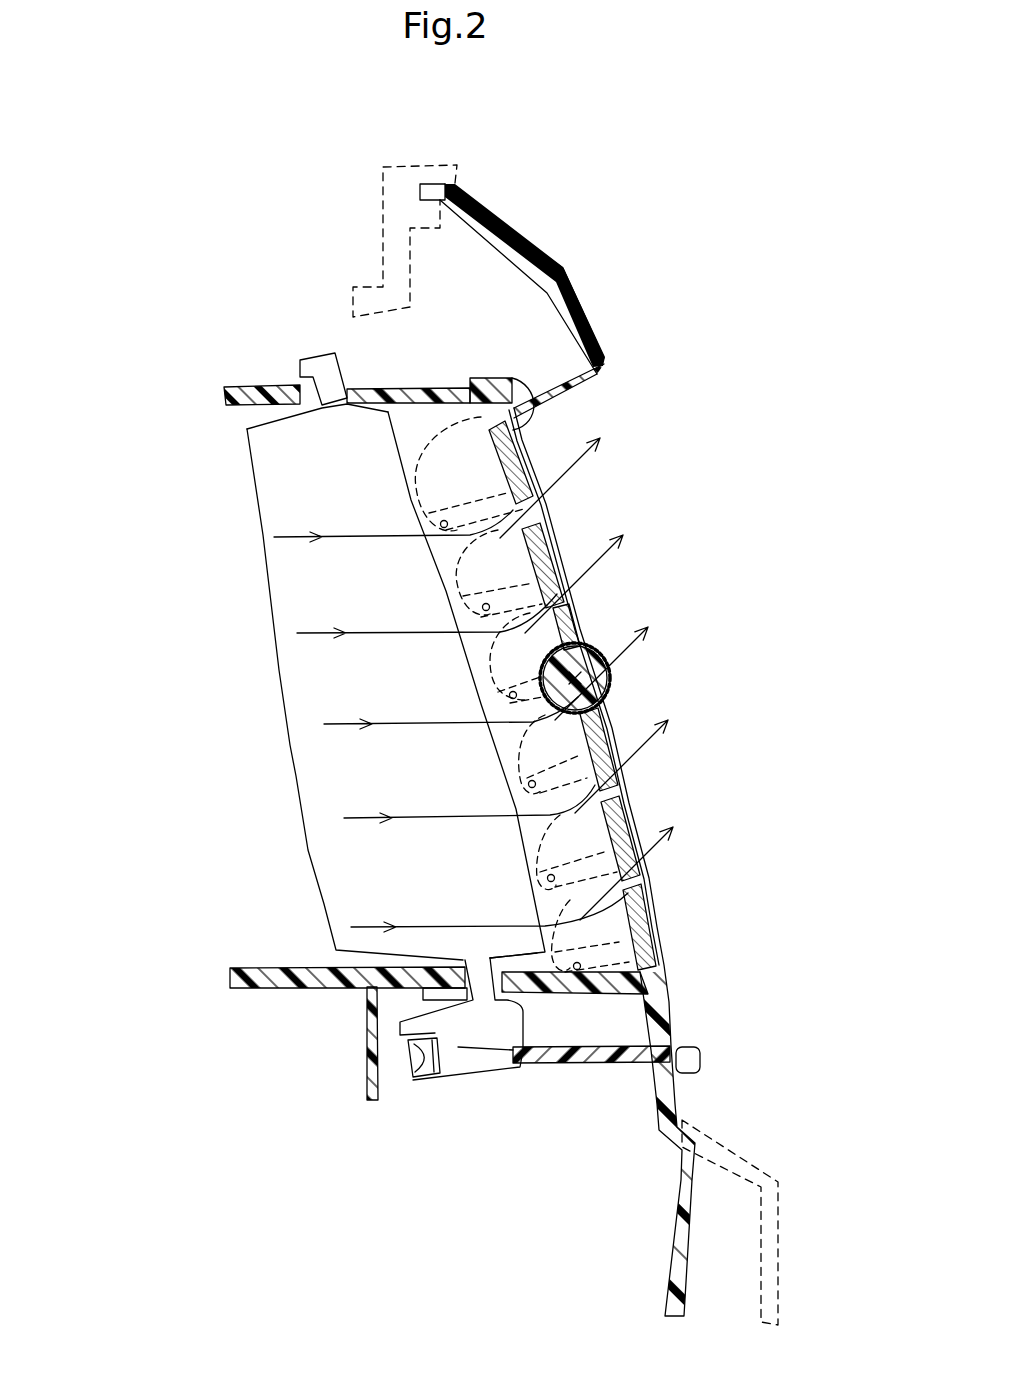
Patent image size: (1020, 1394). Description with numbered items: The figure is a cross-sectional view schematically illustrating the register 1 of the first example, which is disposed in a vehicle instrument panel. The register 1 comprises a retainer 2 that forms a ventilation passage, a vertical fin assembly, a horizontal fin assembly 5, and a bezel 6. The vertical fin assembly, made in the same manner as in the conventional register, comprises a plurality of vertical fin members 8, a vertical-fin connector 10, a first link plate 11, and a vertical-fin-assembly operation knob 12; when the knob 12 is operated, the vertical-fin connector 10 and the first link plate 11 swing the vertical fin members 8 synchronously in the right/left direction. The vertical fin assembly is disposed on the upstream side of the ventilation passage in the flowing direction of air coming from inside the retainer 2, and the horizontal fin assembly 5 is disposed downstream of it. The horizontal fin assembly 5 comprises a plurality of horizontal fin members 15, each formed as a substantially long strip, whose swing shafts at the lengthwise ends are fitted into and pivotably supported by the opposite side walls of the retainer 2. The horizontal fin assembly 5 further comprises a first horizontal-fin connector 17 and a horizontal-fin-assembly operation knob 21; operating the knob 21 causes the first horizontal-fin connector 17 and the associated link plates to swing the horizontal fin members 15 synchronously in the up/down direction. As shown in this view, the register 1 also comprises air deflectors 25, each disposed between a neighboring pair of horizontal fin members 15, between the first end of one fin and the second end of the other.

The register 1 is at (190, 262).
The retainer 2 is at (398, 393).
The horizontal fin assembly 5 is at (581, 488).
The bezel 6 is at (520, 237).
The vertical fin members 8 is at (287, 447).
The vertical-fin connector 10 is at (518, 1067).
The first link plate 11 is at (462, 1048).
The vertical-fin-assembly operation knob 12 is at (674, 1062).
The horizontal fin members 15 is at (503, 458).
The first horizontal-fin connector 17 is at (520, 408).
The horizontal-fin-assembly operation knob 21 is at (608, 645).
The air deflectors 25 is at (633, 778).